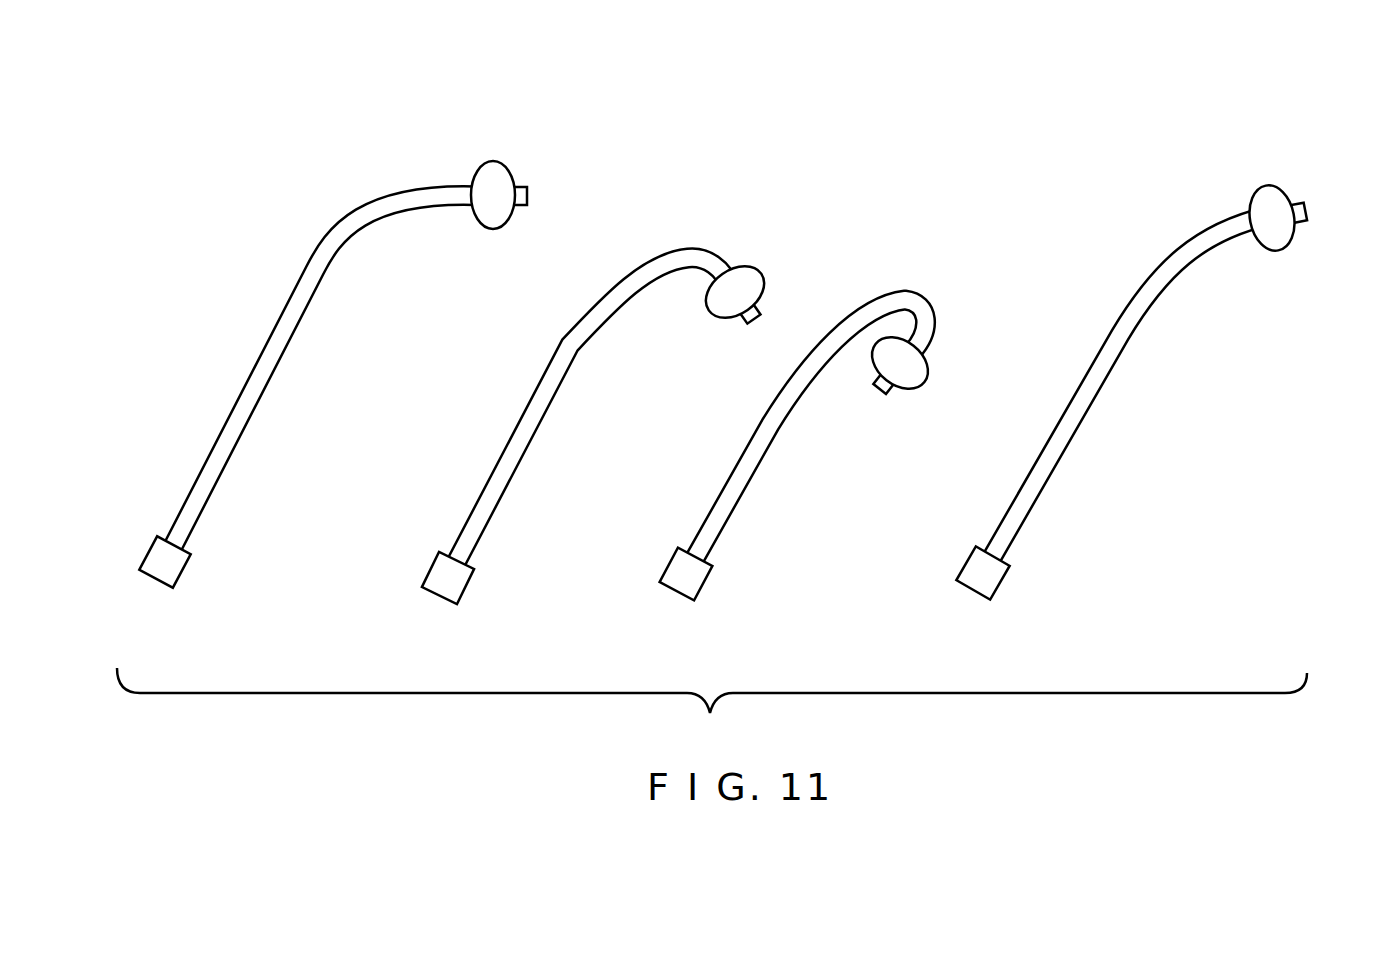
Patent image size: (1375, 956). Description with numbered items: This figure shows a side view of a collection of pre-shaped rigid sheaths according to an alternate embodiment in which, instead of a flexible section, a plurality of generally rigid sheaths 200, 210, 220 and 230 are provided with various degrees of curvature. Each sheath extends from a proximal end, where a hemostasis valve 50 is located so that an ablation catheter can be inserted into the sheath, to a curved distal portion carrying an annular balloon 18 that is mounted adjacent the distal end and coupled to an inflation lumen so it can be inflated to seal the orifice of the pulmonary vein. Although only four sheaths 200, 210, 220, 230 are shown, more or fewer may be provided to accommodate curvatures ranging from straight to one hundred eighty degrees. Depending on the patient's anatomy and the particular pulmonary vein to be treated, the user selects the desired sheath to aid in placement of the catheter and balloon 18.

The annular balloon 18 is at (513, 178).
The hemostasis valve 50 is at (192, 560).
The rigid sheath 200 is at (255, 363).
The rigid sheath 210 is at (535, 395).
The rigid sheath 220 is at (760, 425).
The rigid sheath 230 is at (1163, 260).